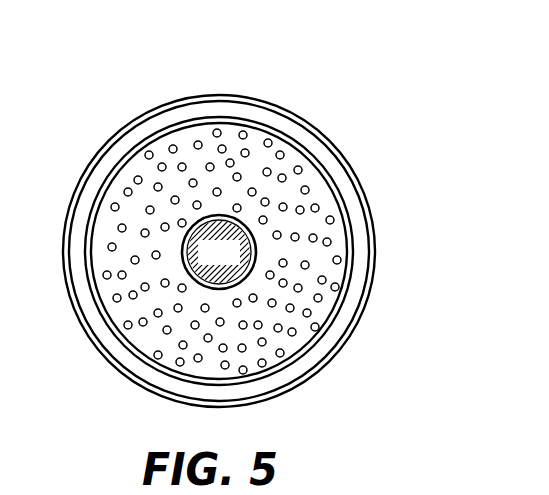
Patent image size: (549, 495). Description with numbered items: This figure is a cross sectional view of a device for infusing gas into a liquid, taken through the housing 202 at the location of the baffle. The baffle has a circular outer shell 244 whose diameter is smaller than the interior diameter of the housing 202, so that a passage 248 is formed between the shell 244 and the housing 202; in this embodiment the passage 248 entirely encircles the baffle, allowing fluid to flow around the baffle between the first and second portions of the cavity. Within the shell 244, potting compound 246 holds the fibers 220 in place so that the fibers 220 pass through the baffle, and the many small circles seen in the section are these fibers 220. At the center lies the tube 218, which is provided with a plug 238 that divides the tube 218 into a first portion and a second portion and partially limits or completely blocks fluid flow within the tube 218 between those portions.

The housing 202 is at (350, 162).
The tube 218 is at (202, 285).
The fibers 220 is at (148, 152).
The plug 238 is at (199, 267).
The outer shell 244 is at (330, 324).
The potting compound 246 is at (296, 366).
The passage 248 is at (358, 223).